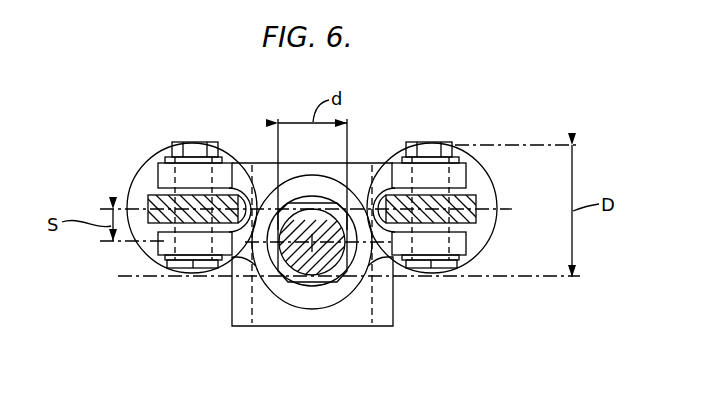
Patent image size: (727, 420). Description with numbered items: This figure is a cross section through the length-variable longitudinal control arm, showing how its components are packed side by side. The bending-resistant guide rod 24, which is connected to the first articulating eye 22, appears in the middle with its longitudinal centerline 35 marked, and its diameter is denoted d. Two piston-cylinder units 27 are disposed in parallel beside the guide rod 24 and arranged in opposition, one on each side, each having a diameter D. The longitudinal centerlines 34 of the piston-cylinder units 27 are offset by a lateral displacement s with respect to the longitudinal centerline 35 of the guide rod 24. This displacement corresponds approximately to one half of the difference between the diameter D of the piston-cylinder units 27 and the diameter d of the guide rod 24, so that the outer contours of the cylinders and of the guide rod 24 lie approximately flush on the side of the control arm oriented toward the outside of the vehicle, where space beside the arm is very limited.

The first articulating eye 22 is at (381, 328).
The guide rod 24 is at (260, 270).
The piston-cylinder unit 27 is at (133, 187).
The longitudinal centerline of the piston-cylinder unit 34 is at (192, 213).
The longitudinal centerline of the guide rod 35 is at (302, 268).